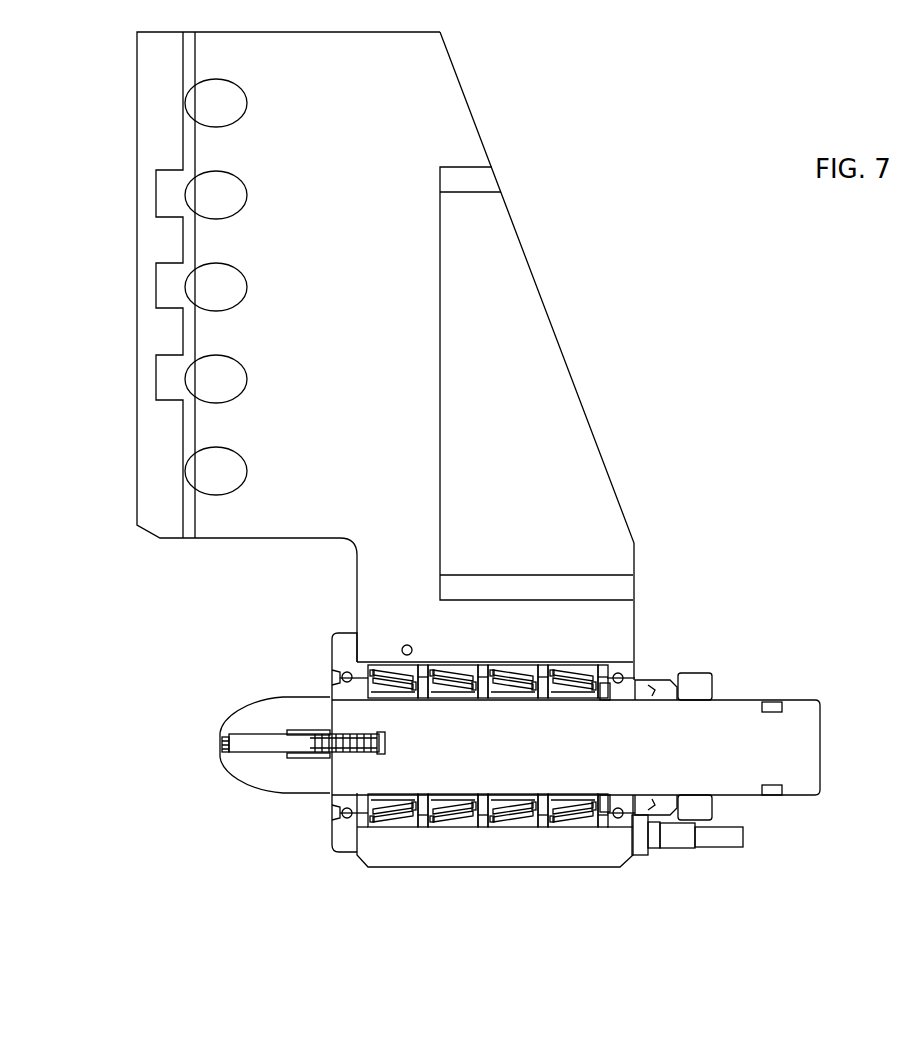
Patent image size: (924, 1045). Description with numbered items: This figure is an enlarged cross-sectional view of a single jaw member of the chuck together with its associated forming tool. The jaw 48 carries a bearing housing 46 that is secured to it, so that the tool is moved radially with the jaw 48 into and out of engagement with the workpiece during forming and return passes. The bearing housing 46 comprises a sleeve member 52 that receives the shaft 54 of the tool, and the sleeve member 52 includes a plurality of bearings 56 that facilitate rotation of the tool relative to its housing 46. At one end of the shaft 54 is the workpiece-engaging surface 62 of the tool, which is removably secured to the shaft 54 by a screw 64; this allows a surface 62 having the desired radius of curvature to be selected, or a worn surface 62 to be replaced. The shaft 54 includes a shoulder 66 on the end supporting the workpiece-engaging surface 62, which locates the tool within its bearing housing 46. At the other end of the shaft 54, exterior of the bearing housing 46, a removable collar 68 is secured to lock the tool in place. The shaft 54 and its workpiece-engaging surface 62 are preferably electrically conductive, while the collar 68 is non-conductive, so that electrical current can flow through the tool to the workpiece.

The bearing housing 46 is at (613, 630).
The jaw 48 is at (400, 112).
The sleeve member 52 is at (560, 672).
The shaft 54 is at (730, 740).
The bearings 56 is at (458, 813).
The workpiece-engaging surface 62 is at (267, 772).
The screw 64 is at (218, 742).
The shoulder 66 is at (340, 640).
The collar 68 is at (700, 680).